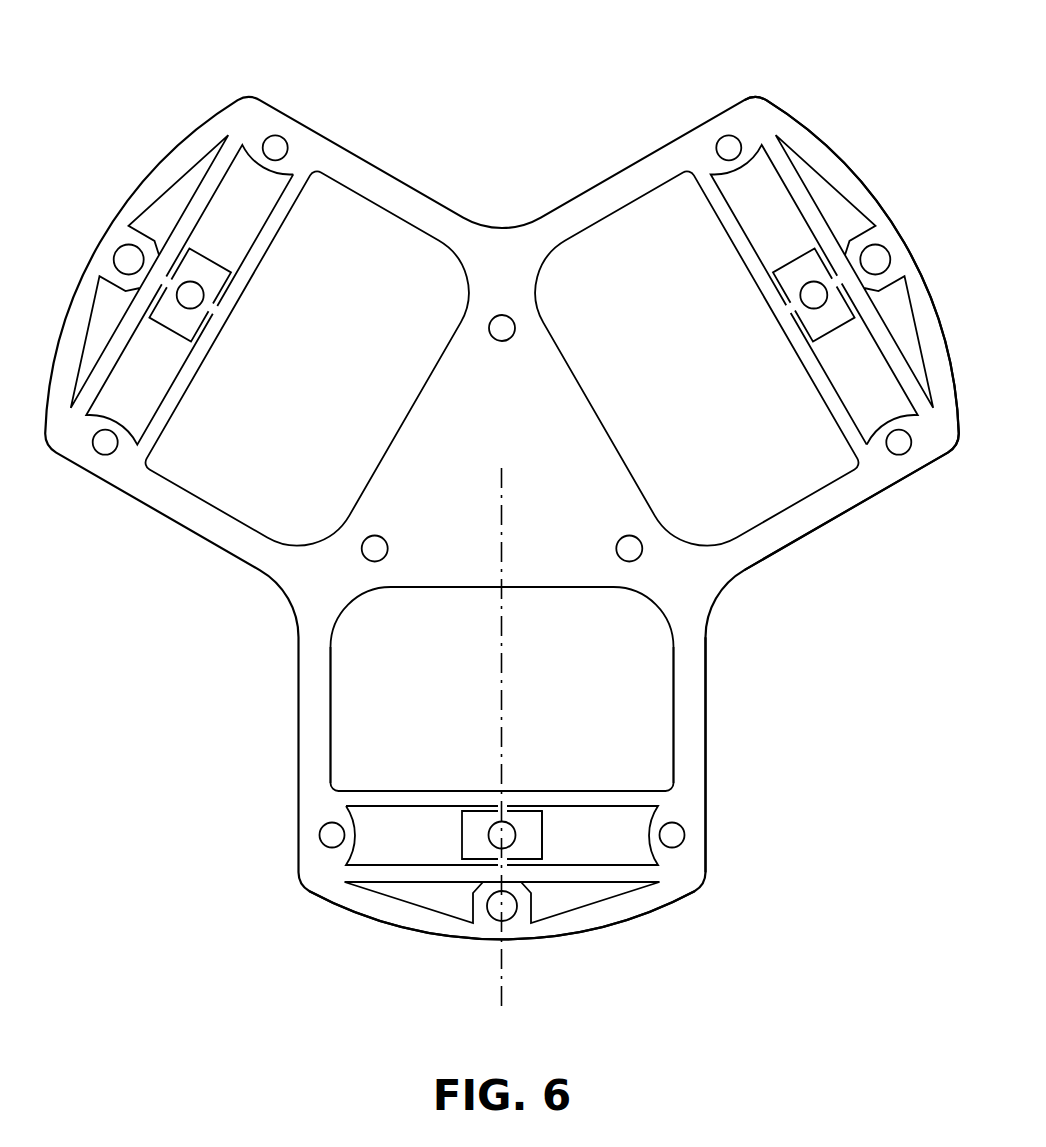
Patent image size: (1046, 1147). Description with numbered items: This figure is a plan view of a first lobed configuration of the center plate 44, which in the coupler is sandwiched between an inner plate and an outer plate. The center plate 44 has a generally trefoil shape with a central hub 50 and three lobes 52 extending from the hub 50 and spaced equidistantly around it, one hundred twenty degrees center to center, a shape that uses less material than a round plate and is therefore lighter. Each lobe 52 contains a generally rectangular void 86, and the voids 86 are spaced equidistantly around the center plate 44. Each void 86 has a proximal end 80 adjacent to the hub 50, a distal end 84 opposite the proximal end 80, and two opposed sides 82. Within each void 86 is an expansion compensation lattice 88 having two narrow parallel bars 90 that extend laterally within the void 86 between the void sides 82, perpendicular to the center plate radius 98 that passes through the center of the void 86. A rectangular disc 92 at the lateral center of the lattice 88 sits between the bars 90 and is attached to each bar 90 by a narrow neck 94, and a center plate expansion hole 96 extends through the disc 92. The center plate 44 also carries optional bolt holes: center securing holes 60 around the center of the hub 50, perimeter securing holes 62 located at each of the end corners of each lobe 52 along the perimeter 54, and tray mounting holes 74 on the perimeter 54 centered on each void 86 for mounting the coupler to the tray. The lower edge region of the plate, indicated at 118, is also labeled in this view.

The center plate 44 is at (247, 58).
The central hub 50 is at (487, 457).
The lobe 52 is at (372, 163).
The perimeter 54 is at (826, 145).
The center securing hole 60 is at (495, 340).
The perimeter securing hole 62 is at (319, 836).
The tray mounting hole 74 is at (498, 918).
The proximal end 80 is at (486, 590).
The void side 82 is at (331, 707).
The distal end 84 is at (577, 910).
The void 86 is at (451, 703).
The expansion compensation lattice 88 is at (232, 323).
The bar 90 is at (412, 790).
The disc 92 is at (543, 845).
The neck 94 is at (507, 805).
The center plate expansion hole 96 is at (488, 835).
The center plate radius 98 is at (505, 558).
The bottom edge 118 is at (403, 927).